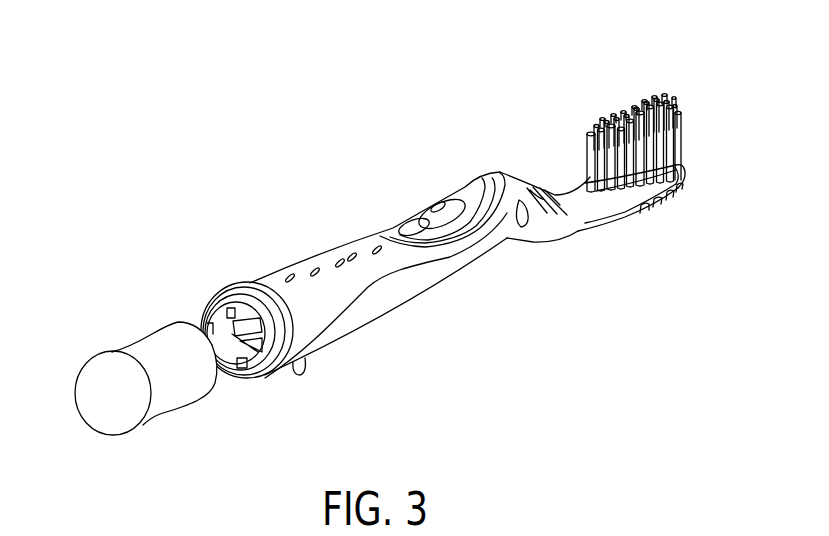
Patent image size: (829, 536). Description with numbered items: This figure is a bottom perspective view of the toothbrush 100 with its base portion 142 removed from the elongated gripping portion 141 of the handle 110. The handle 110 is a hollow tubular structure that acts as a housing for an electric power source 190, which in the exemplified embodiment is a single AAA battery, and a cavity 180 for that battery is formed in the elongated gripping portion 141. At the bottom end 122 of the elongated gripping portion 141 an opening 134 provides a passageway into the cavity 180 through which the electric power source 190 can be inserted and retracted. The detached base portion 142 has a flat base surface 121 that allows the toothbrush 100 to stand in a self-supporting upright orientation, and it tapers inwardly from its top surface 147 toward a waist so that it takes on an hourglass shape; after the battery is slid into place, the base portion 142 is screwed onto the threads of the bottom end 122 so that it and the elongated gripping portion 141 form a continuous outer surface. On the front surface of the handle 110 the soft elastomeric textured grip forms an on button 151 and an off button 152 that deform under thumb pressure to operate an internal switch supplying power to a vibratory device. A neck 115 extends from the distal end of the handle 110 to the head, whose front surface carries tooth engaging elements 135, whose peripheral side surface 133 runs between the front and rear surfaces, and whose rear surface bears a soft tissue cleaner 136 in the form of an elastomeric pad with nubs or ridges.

The toothbrush 100 is at (300, 108).
The handle 110 is at (407, 288).
The neck 115 is at (571, 243).
The flat base surface 121 is at (97, 412).
The bottom end 122 is at (222, 300).
The peripheral side surface 133 is at (688, 177).
The opening 134 is at (262, 378).
The tooth engaging elements 135 is at (681, 92).
The soft tissue cleaner 136 is at (650, 226).
The elongated gripping portion 141 is at (309, 240).
The base portion 142 is at (136, 353).
The top surface 147 is at (213, 390).
The on button 151 is at (458, 208).
The off button 152 is at (422, 226).
The cavity 180 is at (214, 330).
The electric power source 190 is at (246, 306).